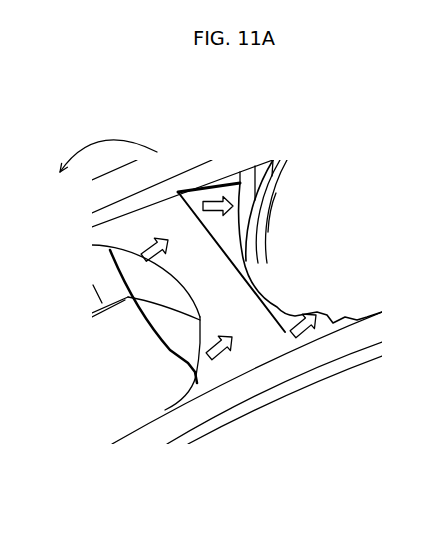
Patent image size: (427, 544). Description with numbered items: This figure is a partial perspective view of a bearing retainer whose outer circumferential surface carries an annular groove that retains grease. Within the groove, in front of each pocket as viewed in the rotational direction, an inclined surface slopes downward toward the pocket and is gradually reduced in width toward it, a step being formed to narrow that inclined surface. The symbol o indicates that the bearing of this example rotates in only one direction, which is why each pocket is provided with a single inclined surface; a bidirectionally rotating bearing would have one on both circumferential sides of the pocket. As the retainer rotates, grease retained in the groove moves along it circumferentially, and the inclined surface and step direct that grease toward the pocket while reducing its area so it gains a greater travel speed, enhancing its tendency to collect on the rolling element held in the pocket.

The rotational direction symbol o is at (100, 140).